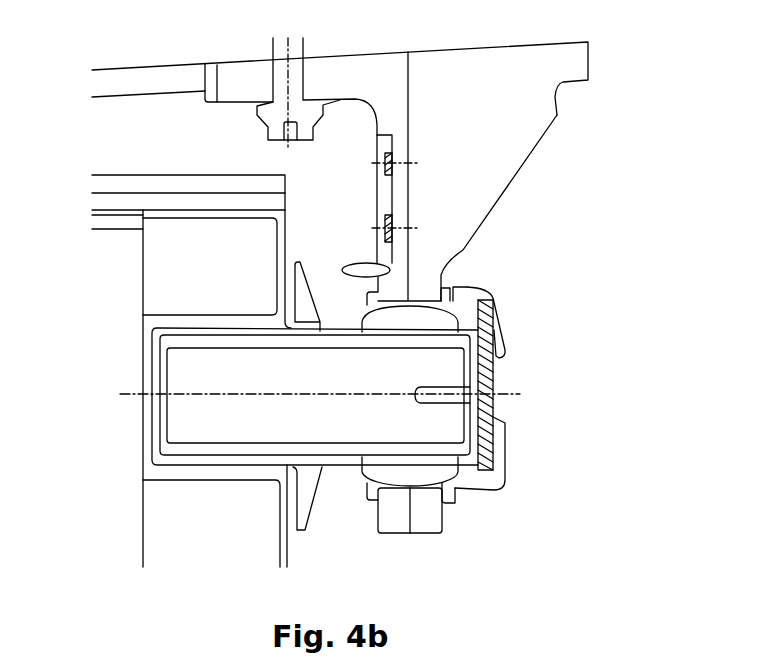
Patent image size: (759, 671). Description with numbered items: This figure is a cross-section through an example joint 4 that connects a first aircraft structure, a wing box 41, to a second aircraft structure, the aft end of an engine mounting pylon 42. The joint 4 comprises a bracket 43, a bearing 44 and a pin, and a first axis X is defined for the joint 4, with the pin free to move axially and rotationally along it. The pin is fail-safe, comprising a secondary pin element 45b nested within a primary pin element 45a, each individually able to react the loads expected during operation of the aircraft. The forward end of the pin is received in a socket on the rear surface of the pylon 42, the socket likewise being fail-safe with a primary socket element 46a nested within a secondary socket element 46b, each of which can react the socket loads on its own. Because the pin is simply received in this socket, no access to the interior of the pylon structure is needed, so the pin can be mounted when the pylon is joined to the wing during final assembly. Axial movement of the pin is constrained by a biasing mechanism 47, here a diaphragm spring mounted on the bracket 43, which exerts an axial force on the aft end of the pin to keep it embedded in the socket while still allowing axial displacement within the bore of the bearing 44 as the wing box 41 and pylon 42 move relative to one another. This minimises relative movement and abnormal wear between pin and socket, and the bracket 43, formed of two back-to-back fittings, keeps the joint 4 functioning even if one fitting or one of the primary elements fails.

The joint 4 is at (595, 461).
The wing box 41 is at (238, 34).
The engine mounting pylon 42 is at (157, 186).
The bracket 43 is at (463, 155).
The bearing 44 is at (417, 468).
The primary pin element 45a is at (190, 342).
The secondary pin element 45b is at (212, 406).
The primary socket element 46a is at (172, 465).
The secondary socket element 46b is at (190, 321).
The biasing mechanism 47 is at (495, 379).
The first axis X is at (130, 397).